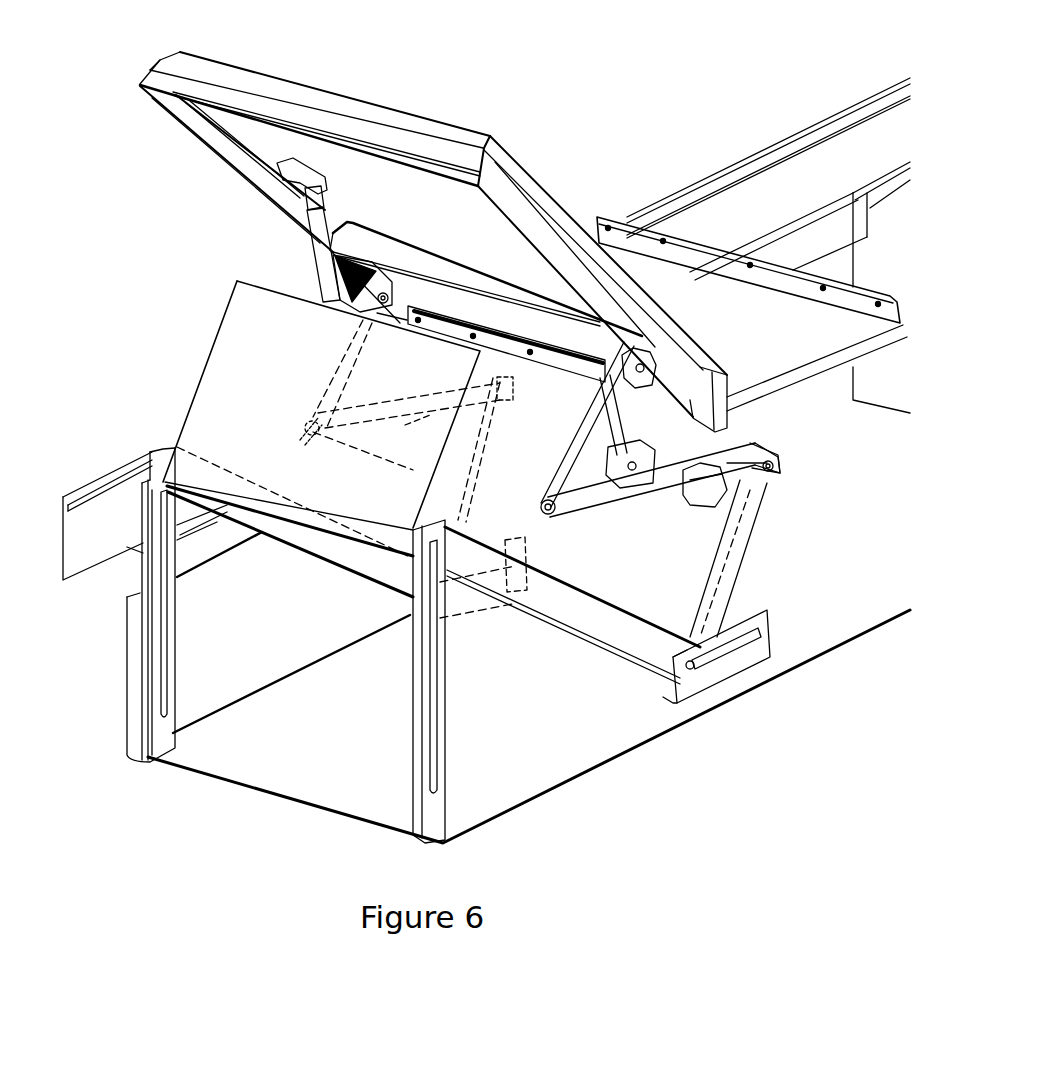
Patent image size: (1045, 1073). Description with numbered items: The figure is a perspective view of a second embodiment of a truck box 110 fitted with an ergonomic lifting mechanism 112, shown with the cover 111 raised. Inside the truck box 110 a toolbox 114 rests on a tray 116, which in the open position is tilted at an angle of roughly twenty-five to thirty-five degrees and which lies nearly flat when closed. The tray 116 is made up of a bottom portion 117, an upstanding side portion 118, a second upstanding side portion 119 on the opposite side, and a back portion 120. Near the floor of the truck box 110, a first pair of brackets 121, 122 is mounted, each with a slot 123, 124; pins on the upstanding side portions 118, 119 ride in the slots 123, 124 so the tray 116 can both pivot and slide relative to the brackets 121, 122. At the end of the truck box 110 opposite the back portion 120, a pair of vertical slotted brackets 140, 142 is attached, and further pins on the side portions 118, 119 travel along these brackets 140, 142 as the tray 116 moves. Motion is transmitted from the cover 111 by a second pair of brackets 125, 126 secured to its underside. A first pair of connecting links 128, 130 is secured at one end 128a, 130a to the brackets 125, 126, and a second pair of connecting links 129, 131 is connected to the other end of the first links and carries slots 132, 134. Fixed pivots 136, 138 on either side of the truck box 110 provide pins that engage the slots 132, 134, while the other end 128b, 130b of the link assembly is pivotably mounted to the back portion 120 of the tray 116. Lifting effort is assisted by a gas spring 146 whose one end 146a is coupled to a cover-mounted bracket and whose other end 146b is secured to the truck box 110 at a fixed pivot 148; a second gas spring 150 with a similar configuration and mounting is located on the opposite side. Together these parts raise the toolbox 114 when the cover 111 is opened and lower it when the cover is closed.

The truck box 110 is at (690, 78).
The cover 111 is at (400, 103).
The lifting mechanism 112 is at (605, 703).
The toolbox 114 is at (197, 348).
The tray 116 is at (295, 556).
The bottom portion 117 is at (367, 560).
The upstanding side portion 118 is at (557, 603).
The second upstanding side portion 119 is at (173, 457).
The back portion 120 is at (735, 548).
The first bracket of first pair 121 is at (770, 648).
The second bracket of first pair 122 is at (470, 610).
The slot 123 is at (767, 606).
The slot 124 is at (566, 437).
The first bracket of second pair 125 is at (655, 358).
The second bracket of second pair 126 is at (387, 292).
The first connecting link 128 is at (562, 462).
The one end of first connecting link 128a is at (590, 395).
The other end of connecting link 128b is at (762, 482).
The second connecting link 129 is at (607, 498).
The first connecting link 130 is at (313, 413).
The one end of first connecting link 130a is at (332, 298).
The other end of connecting link 130b is at (420, 483).
The second connecting link 131 is at (317, 447).
The slot 132 is at (753, 447).
The slot 134 is at (427, 405).
The fixed pivot 136 is at (748, 518).
The fixed pivot 138 is at (417, 440).
The vertical slotted bracket 140 is at (438, 777).
The vertical slotted bracket 142 is at (173, 653).
The gas spring 146 is at (593, 333).
The one end of gas spring 146a is at (615, 318).
The other end of gas spring 146b is at (643, 493).
The fixed pivot 148 is at (715, 373).
The second gas spring 150 is at (320, 250).